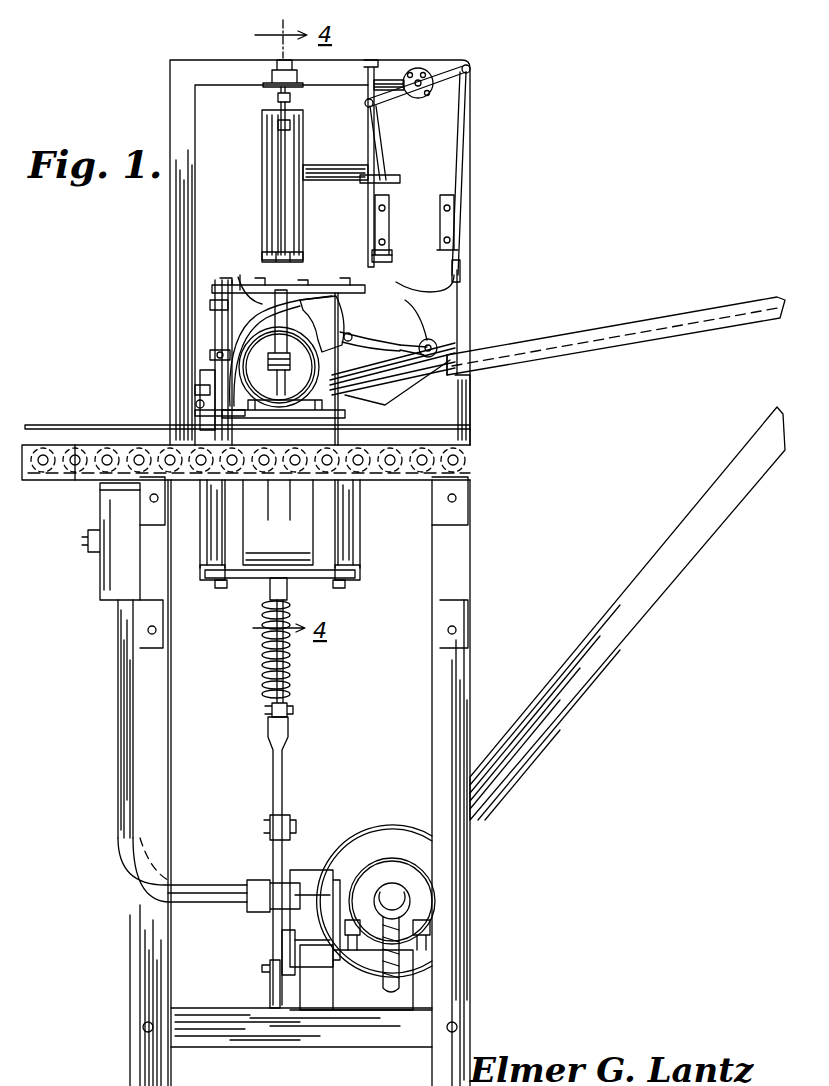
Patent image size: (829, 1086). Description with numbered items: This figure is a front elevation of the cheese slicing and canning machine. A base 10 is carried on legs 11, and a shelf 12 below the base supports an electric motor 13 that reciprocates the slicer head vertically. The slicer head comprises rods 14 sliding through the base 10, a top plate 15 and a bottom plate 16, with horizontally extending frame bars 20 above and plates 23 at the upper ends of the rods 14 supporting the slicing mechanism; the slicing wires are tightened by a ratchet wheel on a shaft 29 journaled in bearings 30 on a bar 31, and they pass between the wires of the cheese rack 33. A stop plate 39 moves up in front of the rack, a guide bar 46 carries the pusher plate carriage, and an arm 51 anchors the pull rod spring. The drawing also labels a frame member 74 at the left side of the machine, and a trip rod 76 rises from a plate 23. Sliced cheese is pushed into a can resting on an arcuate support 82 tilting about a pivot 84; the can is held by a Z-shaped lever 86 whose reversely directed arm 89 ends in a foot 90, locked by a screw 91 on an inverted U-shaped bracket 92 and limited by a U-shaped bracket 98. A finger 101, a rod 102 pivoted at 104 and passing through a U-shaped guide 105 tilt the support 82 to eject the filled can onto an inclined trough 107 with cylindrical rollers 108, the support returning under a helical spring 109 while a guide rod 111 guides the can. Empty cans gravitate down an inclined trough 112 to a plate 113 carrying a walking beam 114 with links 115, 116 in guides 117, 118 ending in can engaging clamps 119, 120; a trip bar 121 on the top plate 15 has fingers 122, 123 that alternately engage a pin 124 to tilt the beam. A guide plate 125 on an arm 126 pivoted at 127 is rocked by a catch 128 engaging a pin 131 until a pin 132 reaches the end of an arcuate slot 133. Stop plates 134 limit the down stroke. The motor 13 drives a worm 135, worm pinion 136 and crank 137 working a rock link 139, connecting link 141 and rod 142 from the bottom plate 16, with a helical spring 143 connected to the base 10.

The base 10 is at (145, 440).
The legs 11 is at (160, 722).
The shelf 12 is at (200, 1010).
The electric motor 13 is at (382, 832).
The rods 14 is at (222, 536).
The top plate 15 is at (240, 275).
The bottom plate 16 is at (312, 574).
The frame bars 20 is at (330, 166).
The plates 23 is at (238, 300).
The shaft 29 is at (195, 413).
The bearings 30 is at (196, 404).
The bar 31 is at (195, 390).
The wire cheese rack 33 is at (408, 405).
The stop plate 39 is at (303, 512).
The guide bar 46 is at (222, 283).
The arm 51 is at (402, 296).
The frame column 74 is at (170, 220).
The trip rod 76 is at (278, 97).
The arcuate support 82 is at (200, 378).
The pivot 84 is at (345, 412).
The Z-shaped lever 86 is at (281, 182).
The reversely directed arm 89 is at (300, 300).
The foot 90 is at (279, 367).
The screw 91 is at (278, 126).
The inverted U-shaped bracket 92 is at (262, 200).
The U-shaped bracket 98 is at (272, 256).
The finger 101 is at (253, 448).
The rod 102 is at (228, 328).
The pivot 104 is at (215, 306).
The U-shaped guide 105 is at (210, 355).
The inclined trough 107 is at (98, 488).
The cylindrical rollers 108 is at (75, 445).
The helical spring 109 is at (290, 448).
The guide rod 111 is at (45, 425).
The inclined trough 112 is at (636, 318).
The plate 113 is at (457, 300).
The walking beam 114 is at (450, 70).
The link 115 is at (389, 218).
The link 116 is at (460, 178).
The guide 117 is at (392, 255).
The guide 118 is at (455, 200).
The can engaging clamp 119 is at (396, 340).
The can engaging clamp 120 is at (460, 270).
The trip bar 121 is at (368, 212).
The finger 122 is at (385, 80).
The finger 123 is at (392, 176).
The pin 124 is at (403, 98).
The guide plate 125 is at (330, 302).
The arm 126 is at (418, 340).
The pivot 127 is at (437, 346).
The catch 128 is at (418, 398).
The pin 131 is at (302, 318).
The pin 132 is at (452, 376).
The arcuate slot 133 is at (440, 288).
The stop plates 134 is at (200, 575).
The worm 135 is at (400, 898).
The worm pinion 136 is at (392, 975).
The crank 137 is at (270, 967).
The rock link 139 is at (282, 942).
The connecting link 141 is at (272, 796).
The rod 142 is at (289, 657).
The helical spring 143 is at (262, 657).